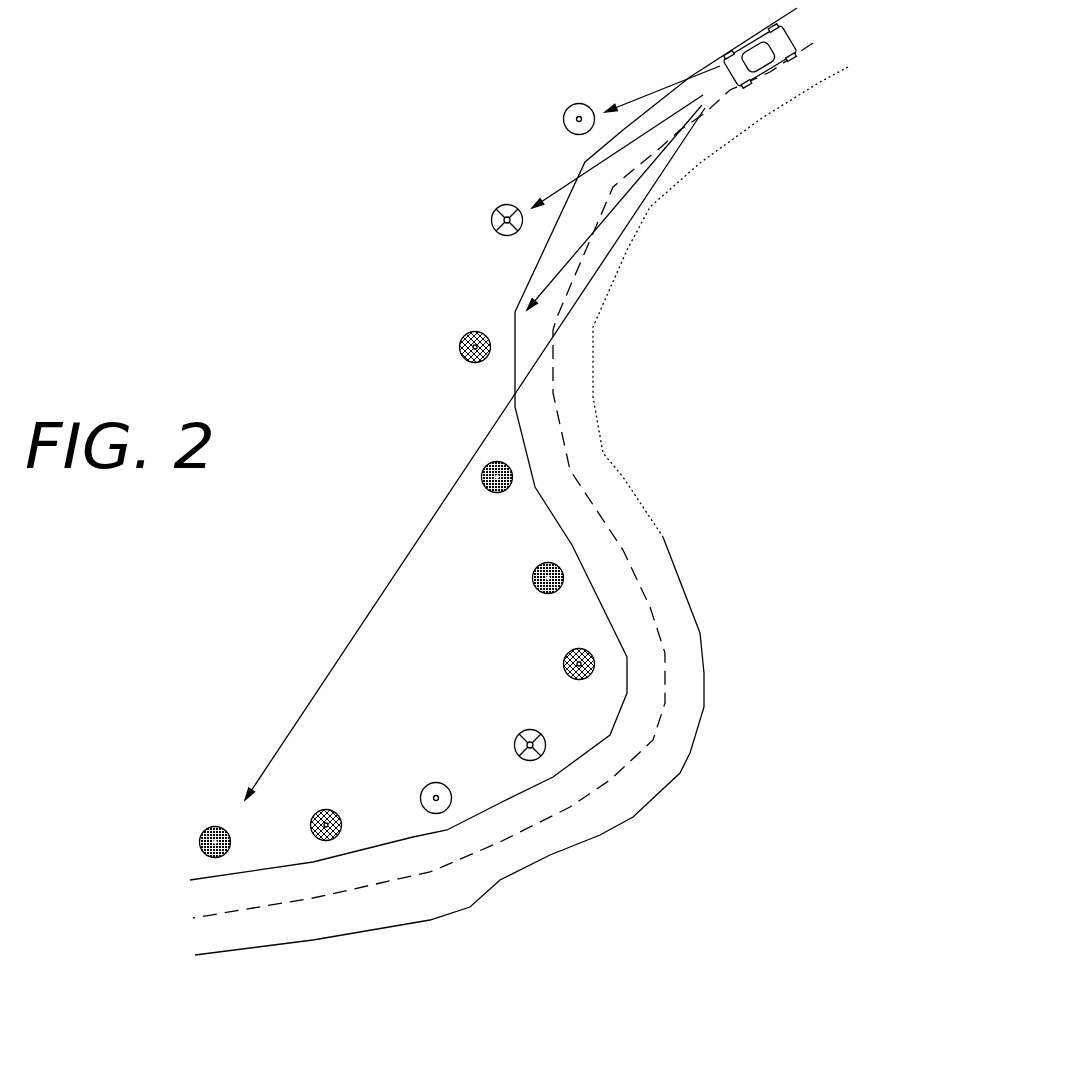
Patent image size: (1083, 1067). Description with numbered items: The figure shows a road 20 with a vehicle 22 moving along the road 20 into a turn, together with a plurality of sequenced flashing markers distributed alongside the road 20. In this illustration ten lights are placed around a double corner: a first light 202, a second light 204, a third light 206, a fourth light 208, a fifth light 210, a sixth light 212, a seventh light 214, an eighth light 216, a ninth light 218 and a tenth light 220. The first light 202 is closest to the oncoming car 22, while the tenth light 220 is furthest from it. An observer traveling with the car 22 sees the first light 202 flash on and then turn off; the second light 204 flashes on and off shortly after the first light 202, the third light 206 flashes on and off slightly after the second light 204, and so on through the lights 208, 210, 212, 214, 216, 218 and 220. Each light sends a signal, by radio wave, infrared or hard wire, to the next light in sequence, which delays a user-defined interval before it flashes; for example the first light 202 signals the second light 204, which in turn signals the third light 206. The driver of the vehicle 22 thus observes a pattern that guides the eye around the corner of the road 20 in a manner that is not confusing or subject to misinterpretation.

The road 20 is at (519, 490).
The vehicle 22 is at (820, 120).
The first light 202 is at (561, 73).
The second light 204 is at (509, 165).
The third light 206 is at (499, 234).
The fourth light 208 is at (415, 412).
The fifth light 210 is at (659, 482).
The sixth light 212 is at (705, 596).
The seventh light 214 is at (453, 679).
The eighth light 216 is at (352, 736).
The ninth light 218 is at (241, 761).
The tenth light 220 is at (132, 793).